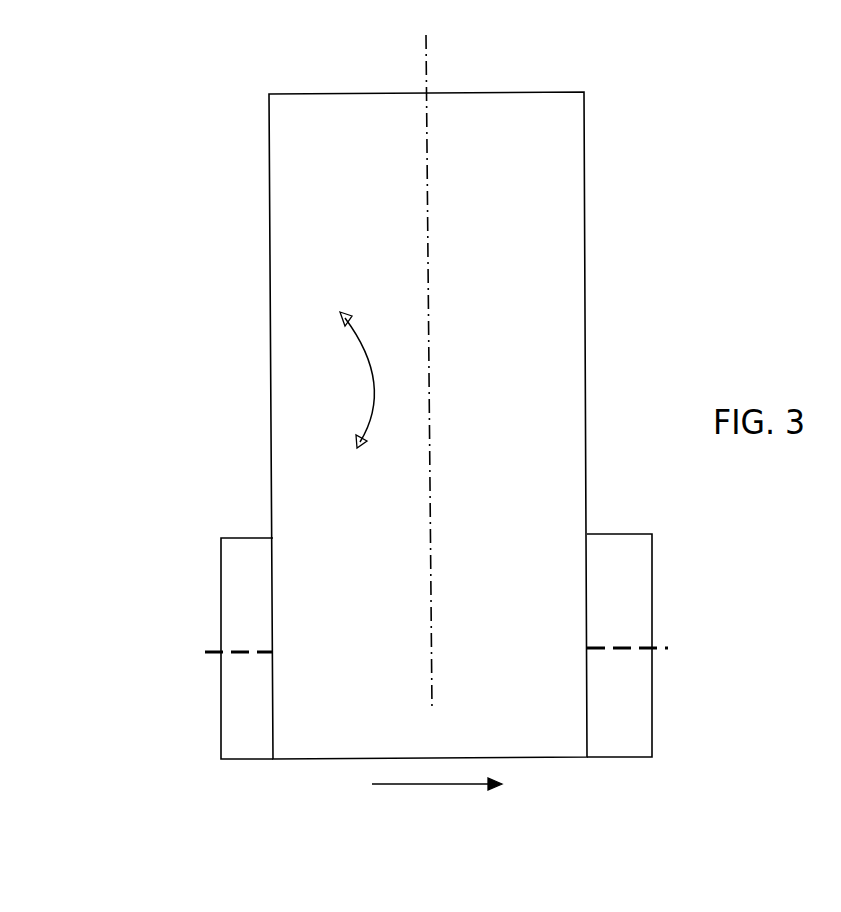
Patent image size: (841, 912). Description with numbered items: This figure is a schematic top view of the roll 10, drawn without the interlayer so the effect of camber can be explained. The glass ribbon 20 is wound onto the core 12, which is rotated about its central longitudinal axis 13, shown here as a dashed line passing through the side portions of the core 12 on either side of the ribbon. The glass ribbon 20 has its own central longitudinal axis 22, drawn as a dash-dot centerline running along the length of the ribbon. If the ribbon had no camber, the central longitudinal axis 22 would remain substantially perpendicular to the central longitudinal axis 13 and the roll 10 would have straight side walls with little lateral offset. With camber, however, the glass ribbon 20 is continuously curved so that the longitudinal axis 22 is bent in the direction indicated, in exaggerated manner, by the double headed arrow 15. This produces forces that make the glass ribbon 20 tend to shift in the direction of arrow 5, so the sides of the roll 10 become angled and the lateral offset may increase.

The arrow 5 is at (437, 798).
The roll 10 is at (312, 780).
The core 12 is at (237, 738).
The central longitudinal axis 13 is at (225, 650).
The double headed arrow 15 is at (383, 385).
The glass ribbon 20 is at (532, 221).
The central longitudinal axis of the glass ribbon 22 is at (426, 70).